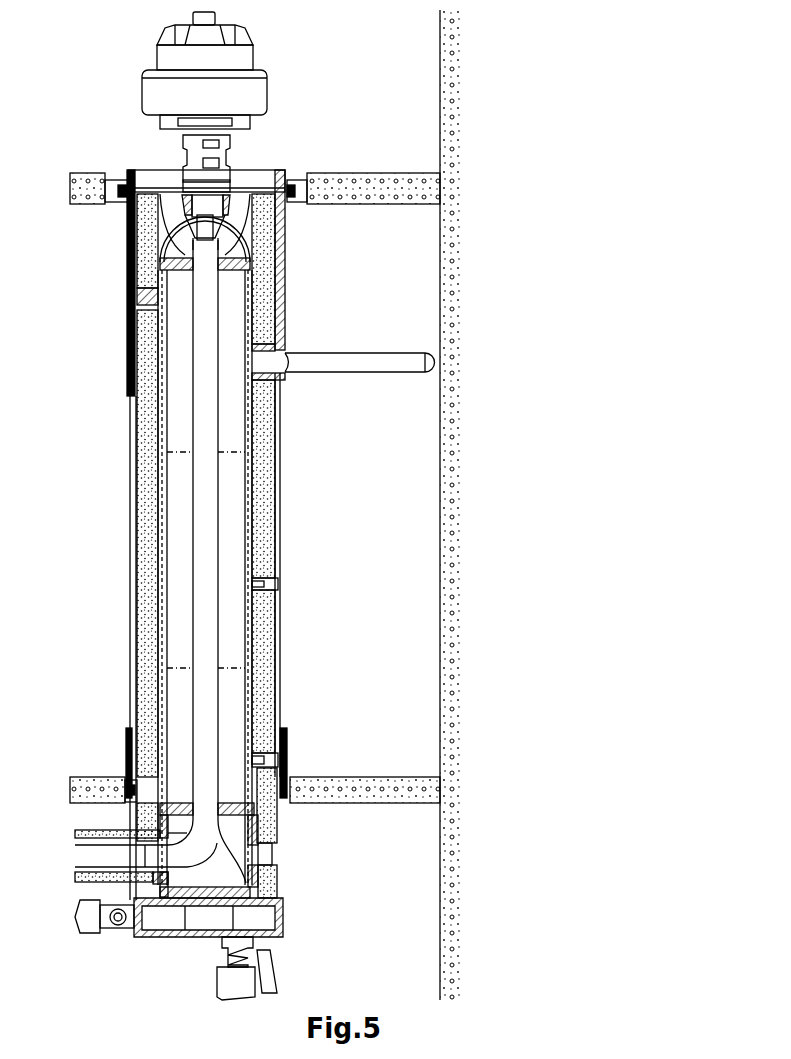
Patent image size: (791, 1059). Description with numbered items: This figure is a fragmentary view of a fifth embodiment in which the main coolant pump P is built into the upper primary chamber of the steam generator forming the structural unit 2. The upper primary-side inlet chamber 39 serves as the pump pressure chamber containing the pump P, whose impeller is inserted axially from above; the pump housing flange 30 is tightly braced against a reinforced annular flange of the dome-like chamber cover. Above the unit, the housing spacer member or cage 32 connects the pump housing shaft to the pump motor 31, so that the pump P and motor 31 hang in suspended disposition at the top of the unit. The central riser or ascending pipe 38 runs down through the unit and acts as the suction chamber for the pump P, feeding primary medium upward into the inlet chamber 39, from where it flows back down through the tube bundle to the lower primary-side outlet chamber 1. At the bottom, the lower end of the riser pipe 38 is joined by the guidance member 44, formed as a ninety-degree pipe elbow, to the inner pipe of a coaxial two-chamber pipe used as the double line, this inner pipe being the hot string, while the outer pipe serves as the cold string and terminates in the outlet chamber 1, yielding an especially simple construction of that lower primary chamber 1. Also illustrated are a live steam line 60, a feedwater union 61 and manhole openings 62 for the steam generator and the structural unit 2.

The outlet chamber 1 is at (237, 837).
The structural unit 2 is at (287, 510).
The pump housing flange 30 is at (219, 188).
The pump motor 31 is at (232, 58).
The spacer member or cage 32 is at (188, 156).
The riser pipe 38 is at (212, 480).
The inlet chamber 39 is at (237, 246).
The guidance member 44 is at (262, 880).
The live steam line 60 is at (307, 355).
The feedwater union 61 is at (272, 583).
The manhole openings 62 is at (147, 302).
The main coolant pump P is at (222, 215).